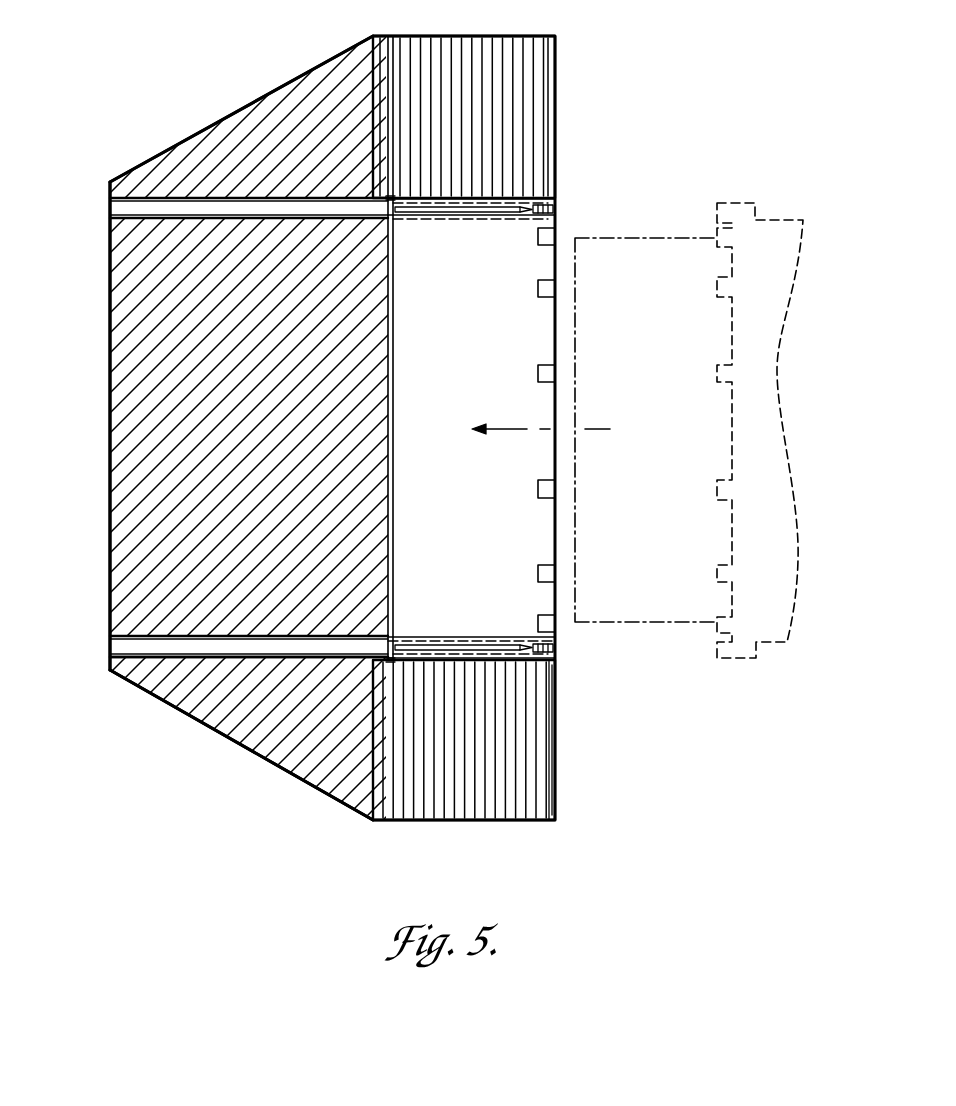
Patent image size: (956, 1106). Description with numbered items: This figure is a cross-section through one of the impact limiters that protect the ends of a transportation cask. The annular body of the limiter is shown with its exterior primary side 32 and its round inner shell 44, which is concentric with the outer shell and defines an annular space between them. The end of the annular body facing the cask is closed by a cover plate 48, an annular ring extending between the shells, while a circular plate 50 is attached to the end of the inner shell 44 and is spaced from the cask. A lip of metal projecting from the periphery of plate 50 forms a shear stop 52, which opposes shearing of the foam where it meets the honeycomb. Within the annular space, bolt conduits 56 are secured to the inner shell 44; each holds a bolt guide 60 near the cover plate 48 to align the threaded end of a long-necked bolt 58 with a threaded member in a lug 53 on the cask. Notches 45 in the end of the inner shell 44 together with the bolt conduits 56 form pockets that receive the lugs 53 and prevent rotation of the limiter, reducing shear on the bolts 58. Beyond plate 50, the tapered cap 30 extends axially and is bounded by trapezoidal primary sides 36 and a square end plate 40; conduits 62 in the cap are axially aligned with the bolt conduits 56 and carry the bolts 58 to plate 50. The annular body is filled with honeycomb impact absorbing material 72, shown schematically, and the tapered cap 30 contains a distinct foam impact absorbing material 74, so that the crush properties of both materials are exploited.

The tapered cap 30 is at (194, 841).
The primary side 32 is at (470, 822).
The primary side 36 is at (228, 120).
The end plate 40 is at (110, 400).
The inner shell 44 is at (557, 422).
The notches 45 is at (557, 372).
The cover plate 48 is at (557, 125).
The circular plate 50 is at (394, 383).
The shear stop 52 is at (387, 197).
The lugs 53 is at (717, 233).
The bolt conduits 56 is at (556, 209).
The bolts 58 is at (490, 647).
The bolt guide 60 is at (538, 195).
The conduits 62 is at (112, 207).
The impact absorbing material 72 is at (537, 783).
The impact absorbing material 74 is at (193, 698).